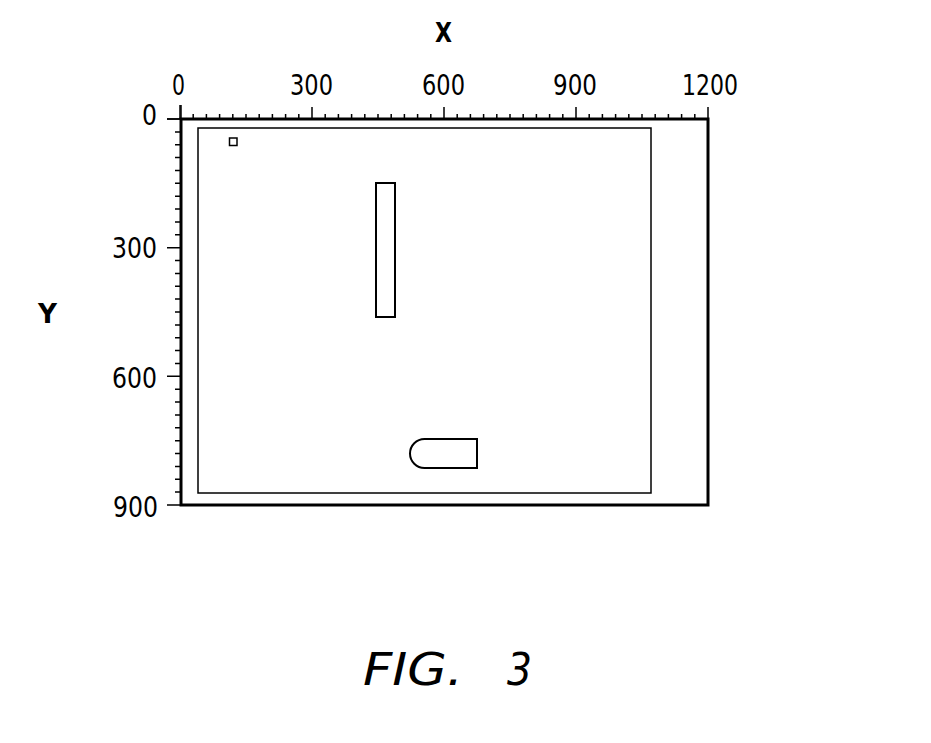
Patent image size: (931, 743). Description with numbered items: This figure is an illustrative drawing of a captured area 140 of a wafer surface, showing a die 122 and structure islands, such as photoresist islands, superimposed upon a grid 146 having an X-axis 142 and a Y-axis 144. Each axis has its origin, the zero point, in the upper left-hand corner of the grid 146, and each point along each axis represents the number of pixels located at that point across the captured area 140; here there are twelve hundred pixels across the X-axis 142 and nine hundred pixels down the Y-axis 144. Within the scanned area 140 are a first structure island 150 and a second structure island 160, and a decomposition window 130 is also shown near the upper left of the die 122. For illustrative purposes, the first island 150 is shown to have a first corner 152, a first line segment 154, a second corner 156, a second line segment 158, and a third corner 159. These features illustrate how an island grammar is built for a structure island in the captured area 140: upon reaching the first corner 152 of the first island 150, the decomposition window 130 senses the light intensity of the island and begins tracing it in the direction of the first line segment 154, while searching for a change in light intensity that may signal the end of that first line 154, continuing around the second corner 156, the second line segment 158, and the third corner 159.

The die 122 is at (613, 365).
The decomposition window 130 is at (233, 138).
The captured area 140 is at (708, 222).
The X-axis 142 is at (708, 120).
The Y-axis 144 is at (180, 506).
The grid 146 is at (168, 111).
The first structure island 150 is at (396, 260).
The first corner 152 is at (376, 183).
The first line segment 154 is at (385, 182).
The second corner 156 is at (397, 182).
The second line segment 158 is at (396, 222).
The third corner 159 is at (397, 317).
The second structure island 160 is at (478, 452).